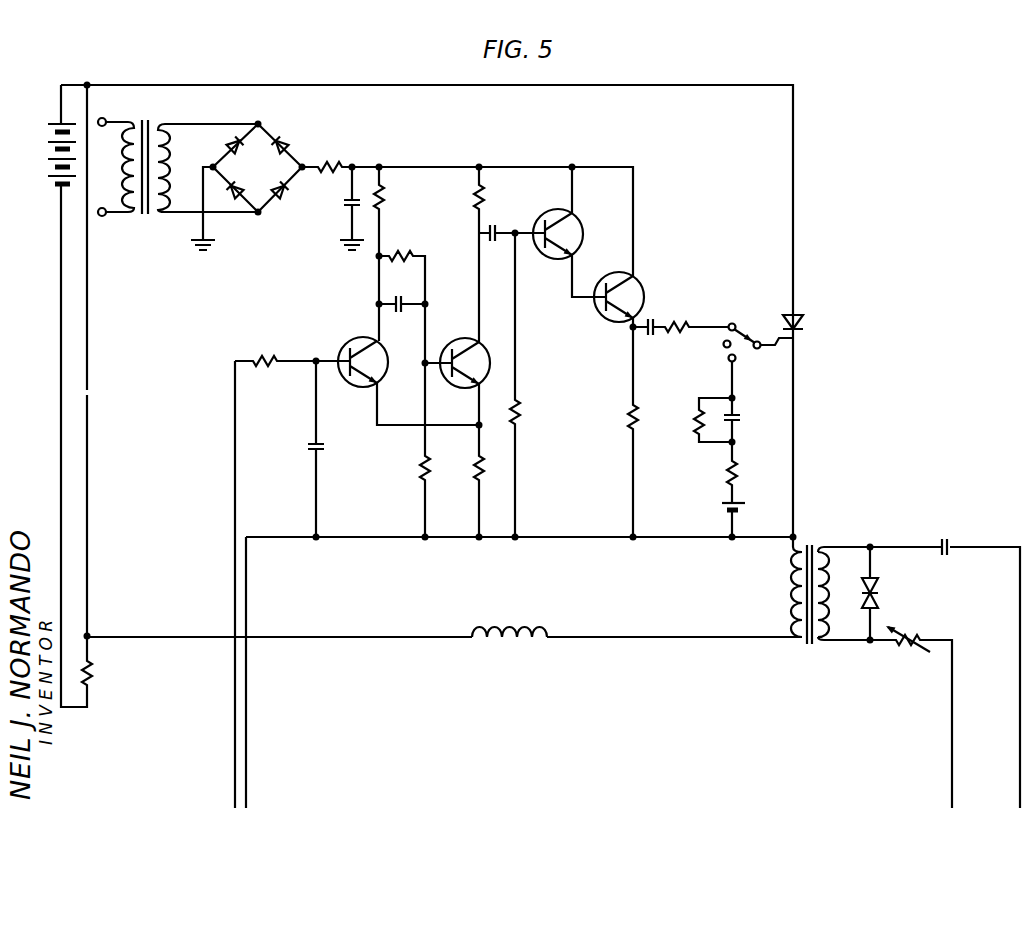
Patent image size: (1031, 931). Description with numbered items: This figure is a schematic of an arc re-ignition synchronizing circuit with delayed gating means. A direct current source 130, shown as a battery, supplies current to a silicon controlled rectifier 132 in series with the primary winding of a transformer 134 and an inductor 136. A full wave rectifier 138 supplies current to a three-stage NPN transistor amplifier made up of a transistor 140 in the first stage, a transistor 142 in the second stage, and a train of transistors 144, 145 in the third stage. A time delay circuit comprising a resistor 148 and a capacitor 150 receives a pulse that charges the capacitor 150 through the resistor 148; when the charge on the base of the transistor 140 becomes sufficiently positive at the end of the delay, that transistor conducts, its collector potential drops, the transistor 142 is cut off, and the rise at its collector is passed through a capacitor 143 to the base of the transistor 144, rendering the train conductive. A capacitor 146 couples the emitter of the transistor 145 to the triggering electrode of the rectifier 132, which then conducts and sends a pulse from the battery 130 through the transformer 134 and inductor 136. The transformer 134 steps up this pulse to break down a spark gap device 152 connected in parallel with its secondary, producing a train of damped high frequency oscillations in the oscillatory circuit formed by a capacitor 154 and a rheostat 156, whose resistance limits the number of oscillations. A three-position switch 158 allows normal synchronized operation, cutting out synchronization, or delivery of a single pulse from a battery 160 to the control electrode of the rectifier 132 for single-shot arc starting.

The direct current source 130 is at (53, 157).
The silicon controlled rectifier 132 is at (800, 323).
The transformer 134 is at (815, 545).
The inductor 136 is at (512, 648).
The full wave rectifier 138 is at (277, 182).
The transistor 140 is at (359, 385).
The transistor 142 is at (447, 343).
The capacitor 143 is at (491, 227).
The transistor 144 is at (573, 226).
The transistor 145 is at (630, 292).
The capacitor 146 is at (655, 320).
The resistor 148 is at (263, 352).
The capacitor 150 is at (306, 448).
The spark gap device 152 is at (880, 594).
The capacitor 154 is at (948, 540).
The rheostat 156 is at (905, 645).
The switch 158 is at (742, 335).
The battery 160 is at (722, 503).